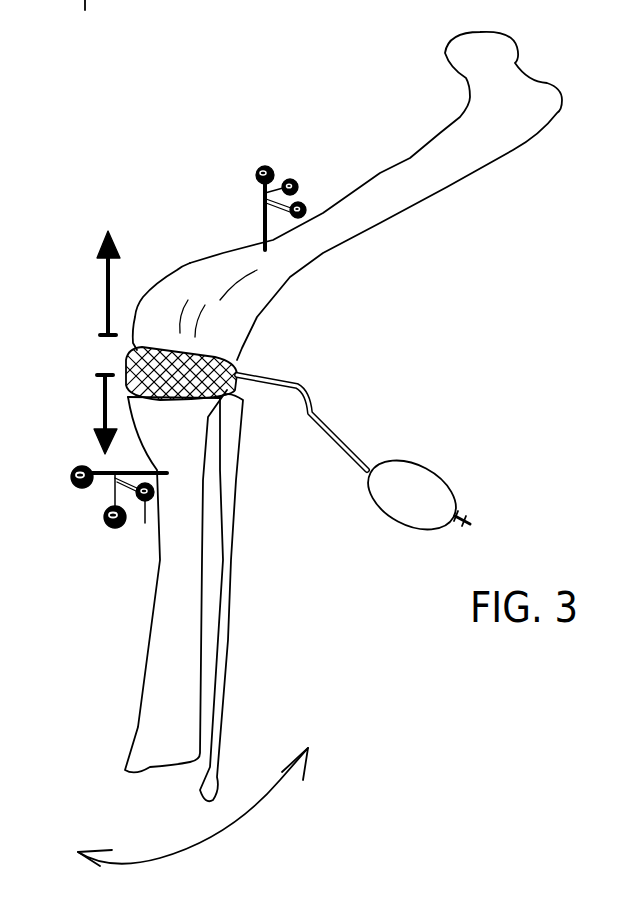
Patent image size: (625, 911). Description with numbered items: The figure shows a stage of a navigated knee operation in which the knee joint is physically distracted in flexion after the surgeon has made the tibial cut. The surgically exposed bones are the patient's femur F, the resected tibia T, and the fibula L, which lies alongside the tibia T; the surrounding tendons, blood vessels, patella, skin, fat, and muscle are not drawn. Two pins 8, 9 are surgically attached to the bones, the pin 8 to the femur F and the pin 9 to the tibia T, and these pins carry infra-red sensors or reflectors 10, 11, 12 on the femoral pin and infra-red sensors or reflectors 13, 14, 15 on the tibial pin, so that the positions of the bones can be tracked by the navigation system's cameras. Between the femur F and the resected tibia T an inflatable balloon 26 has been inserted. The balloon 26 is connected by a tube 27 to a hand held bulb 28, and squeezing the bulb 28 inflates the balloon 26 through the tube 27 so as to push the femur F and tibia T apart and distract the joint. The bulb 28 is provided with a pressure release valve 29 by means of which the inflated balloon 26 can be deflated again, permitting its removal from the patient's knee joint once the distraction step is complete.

The pin 8 is at (276, 192).
The pin 9 is at (96, 494).
The infra-red sensor or reflector 10 is at (267, 167).
The infra-red sensor or reflector 11 is at (295, 178).
The infra-red sensor or reflector 12 is at (303, 203).
The infra-red sensor or reflector 13 is at (70, 487).
The infra-red sensor or reflector 14 is at (100, 532).
The infra-red sensor or reflector 15 is at (134, 514).
The inflatable balloon 26 is at (130, 357).
The tube 27 is at (315, 405).
The hand held bulb 28 is at (422, 465).
The pressure release valve 29 is at (473, 512).
The femur F is at (373, 222).
The tibia T is at (155, 608).
The fibula L is at (232, 610).